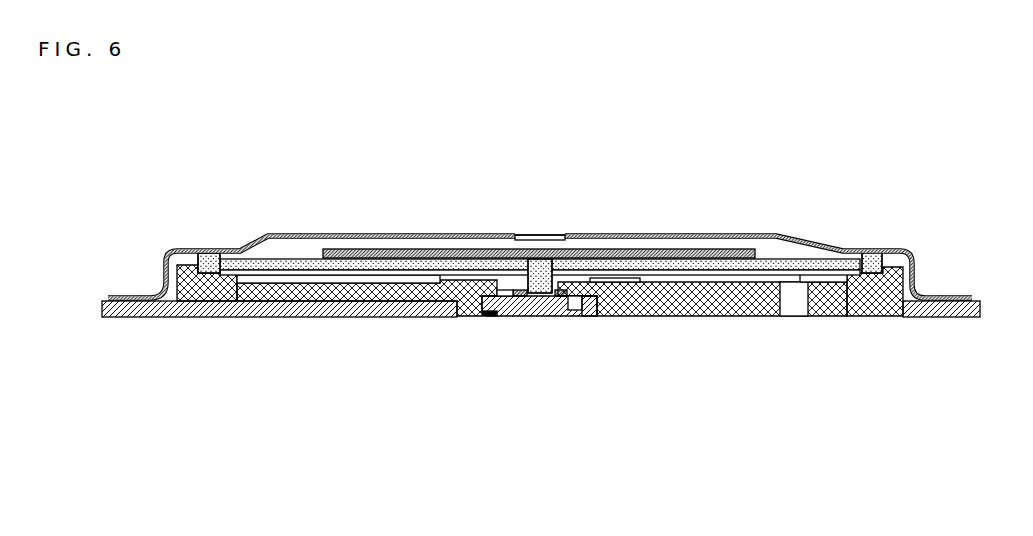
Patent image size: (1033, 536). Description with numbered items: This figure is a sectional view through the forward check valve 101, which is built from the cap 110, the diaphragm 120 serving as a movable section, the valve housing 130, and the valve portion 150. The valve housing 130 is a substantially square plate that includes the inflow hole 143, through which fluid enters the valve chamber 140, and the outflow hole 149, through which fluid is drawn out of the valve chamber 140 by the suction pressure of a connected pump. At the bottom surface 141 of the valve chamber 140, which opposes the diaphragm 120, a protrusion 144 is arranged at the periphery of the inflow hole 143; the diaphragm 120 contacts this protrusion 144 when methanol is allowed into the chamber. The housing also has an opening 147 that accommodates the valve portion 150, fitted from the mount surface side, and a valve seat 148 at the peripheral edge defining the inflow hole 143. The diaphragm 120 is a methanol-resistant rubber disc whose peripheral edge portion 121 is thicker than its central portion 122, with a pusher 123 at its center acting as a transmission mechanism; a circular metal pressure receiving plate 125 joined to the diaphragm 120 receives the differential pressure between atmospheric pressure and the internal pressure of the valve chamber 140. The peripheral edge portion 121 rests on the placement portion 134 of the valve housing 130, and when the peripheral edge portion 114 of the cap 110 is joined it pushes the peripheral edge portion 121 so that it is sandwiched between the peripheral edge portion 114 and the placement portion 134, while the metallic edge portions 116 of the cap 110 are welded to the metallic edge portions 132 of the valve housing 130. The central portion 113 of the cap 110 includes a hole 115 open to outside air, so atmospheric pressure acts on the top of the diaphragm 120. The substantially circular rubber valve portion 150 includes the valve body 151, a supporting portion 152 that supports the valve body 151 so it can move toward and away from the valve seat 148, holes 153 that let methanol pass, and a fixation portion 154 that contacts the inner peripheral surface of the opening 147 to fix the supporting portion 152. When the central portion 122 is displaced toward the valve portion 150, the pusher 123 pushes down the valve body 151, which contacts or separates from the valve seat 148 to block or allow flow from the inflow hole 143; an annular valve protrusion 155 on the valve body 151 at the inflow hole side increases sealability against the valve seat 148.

The forward check valve 101 is at (910, 212).
The cap 110 is at (782, 232).
The central portion of the cap 113 is at (337, 233).
The peripheral edge portion of the cap 114 is at (212, 251).
The hole 115 is at (562, 237).
The edge portions of the cap 116 is at (125, 297).
The diaphragm 120 is at (727, 263).
The peripheral edge portion of the diaphragm 121 is at (198, 262).
The central portion of the diaphragm 122 is at (620, 262).
The pusher 123 is at (557, 235).
The pressure receiving plate 125 is at (672, 250).
The valve housing 130 is at (248, 300).
The edge portions of the valve housing 132 is at (148, 317).
The placement portion 134 is at (217, 301).
The valve chamber 140 is at (373, 283).
The bottom surface of the valve chamber 141 is at (313, 301).
The inflow hole 143 is at (575, 272).
The protrusion 144 is at (473, 280).
The opening 147 is at (463, 316).
The valve seat 148 is at (503, 288).
The outflow hole 149 is at (795, 316).
The valve portion 150 is at (492, 317).
The valve body 151 is at (545, 316).
The supporting portion 152 is at (507, 316).
The holes 153 is at (577, 316).
The fixation portion 154 is at (593, 316).
The valve protrusion 155 is at (540, 262).